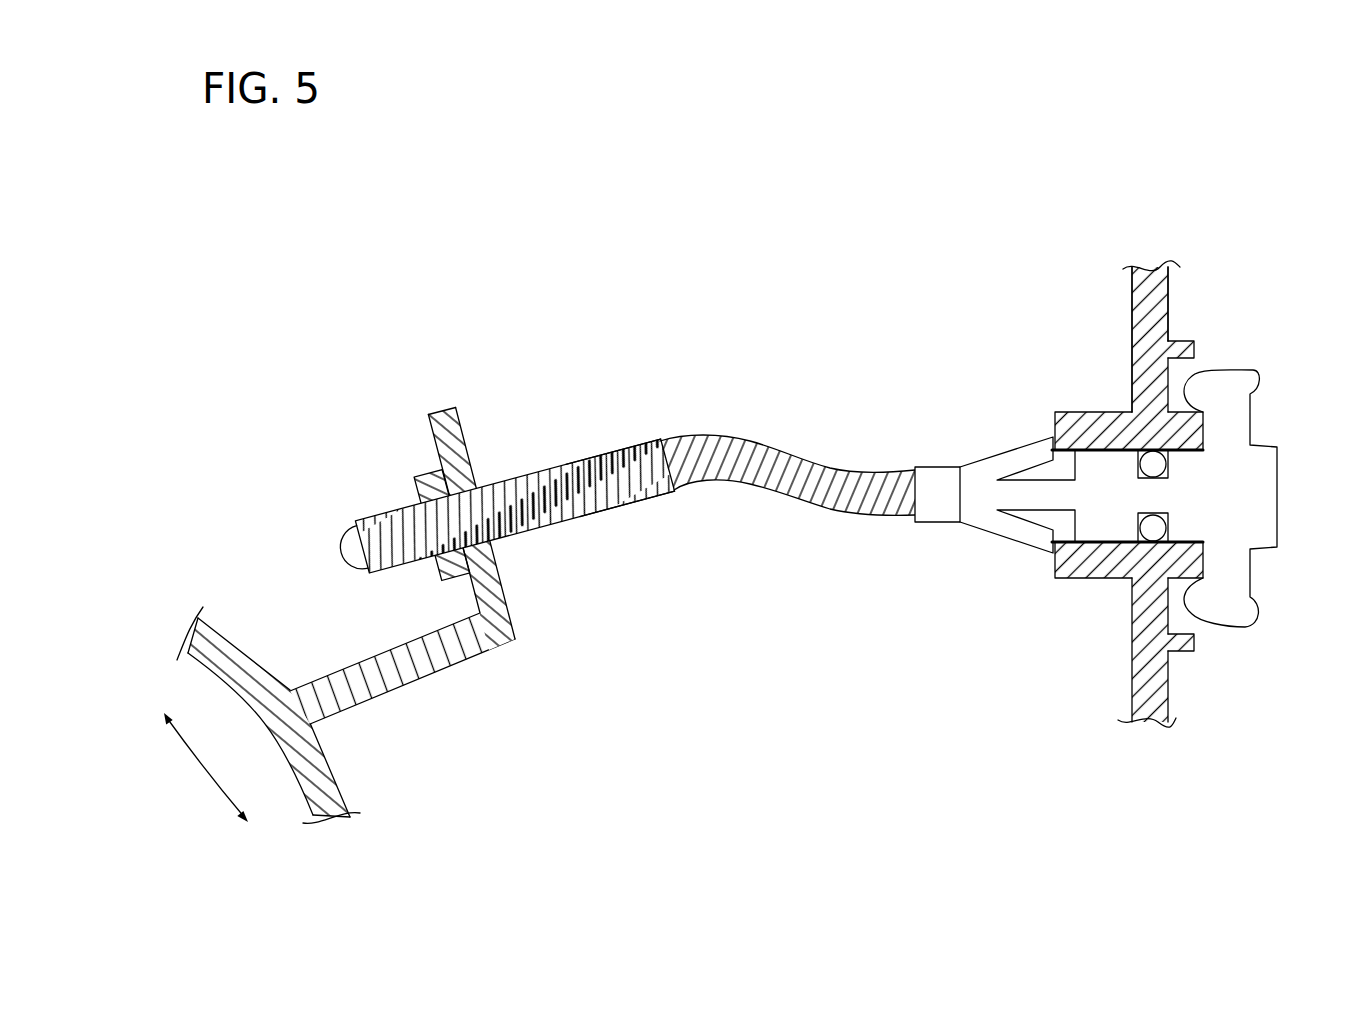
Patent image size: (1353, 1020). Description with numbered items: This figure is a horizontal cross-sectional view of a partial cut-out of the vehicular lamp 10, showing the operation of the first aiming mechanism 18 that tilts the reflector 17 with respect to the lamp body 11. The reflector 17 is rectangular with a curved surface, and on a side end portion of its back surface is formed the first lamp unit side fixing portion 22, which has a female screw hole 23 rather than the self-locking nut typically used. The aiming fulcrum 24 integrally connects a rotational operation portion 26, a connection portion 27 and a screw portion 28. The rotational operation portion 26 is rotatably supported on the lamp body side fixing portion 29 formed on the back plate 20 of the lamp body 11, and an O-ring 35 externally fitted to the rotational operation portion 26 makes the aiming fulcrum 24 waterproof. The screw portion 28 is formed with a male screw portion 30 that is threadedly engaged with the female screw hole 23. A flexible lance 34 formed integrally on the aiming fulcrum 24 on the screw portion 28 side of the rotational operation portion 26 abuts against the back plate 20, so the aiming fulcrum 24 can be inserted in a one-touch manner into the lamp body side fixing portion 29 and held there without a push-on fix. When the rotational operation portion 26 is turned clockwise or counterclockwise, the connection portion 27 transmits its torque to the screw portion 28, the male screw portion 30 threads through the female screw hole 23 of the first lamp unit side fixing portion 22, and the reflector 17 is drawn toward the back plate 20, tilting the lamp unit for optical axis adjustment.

The accelerator pedal device 10 is at (1003, 186).
The lamp body 11 is at (1132, 312).
The reflector 17 is at (240, 648).
The first aiming mechanism 18 is at (995, 459).
The back plate 20 is at (1127, 469).
The first lamp unit side fixing portion 22 is at (412, 690).
The female screw hole 23 is at (497, 567).
The aiming fulcrum 24 is at (787, 493).
The rotational operation portion 26 is at (1228, 388).
The connection portion 27 is at (823, 464).
The screw portion 28 is at (632, 452).
The lamp body side fixing portion 29 is at (1090, 568).
The male screw portion 30 is at (504, 485).
The lance 34 is at (1026, 545).
The O-ring 35 is at (1150, 463).